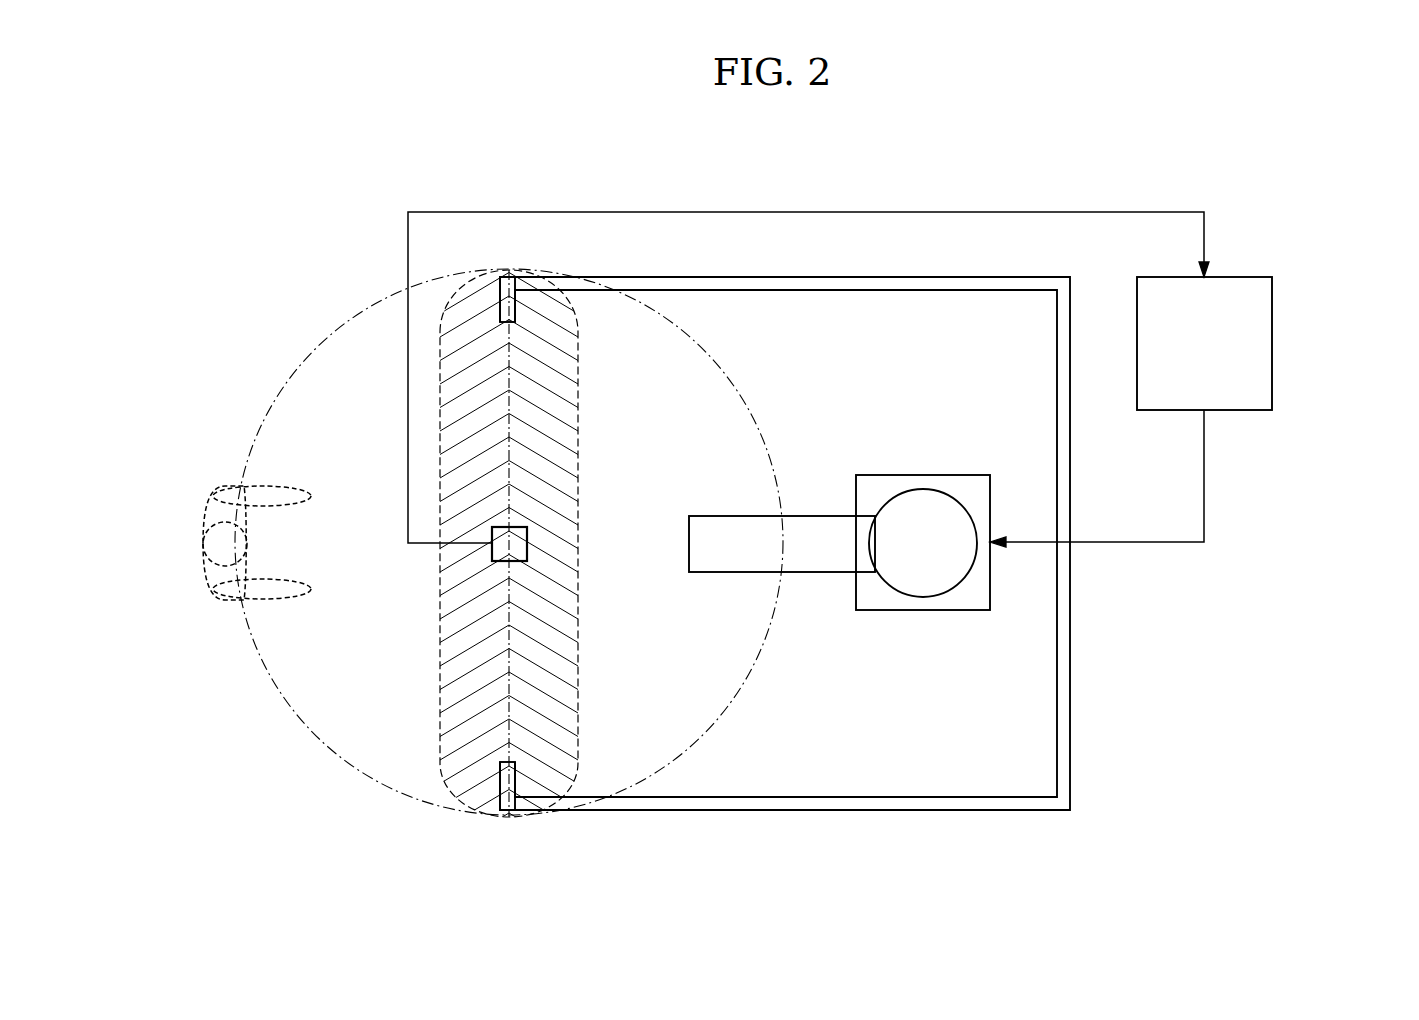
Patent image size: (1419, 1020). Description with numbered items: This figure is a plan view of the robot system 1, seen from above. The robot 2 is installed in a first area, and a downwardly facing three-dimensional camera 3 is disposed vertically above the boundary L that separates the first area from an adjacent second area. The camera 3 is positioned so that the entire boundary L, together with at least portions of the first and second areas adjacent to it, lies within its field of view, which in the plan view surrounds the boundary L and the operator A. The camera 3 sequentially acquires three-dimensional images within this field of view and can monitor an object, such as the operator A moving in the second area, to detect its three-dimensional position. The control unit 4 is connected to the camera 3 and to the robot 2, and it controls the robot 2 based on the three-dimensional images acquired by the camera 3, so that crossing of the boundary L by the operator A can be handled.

The robot system 1 is at (1334, 132).
The robot 2 is at (821, 513).
The three-dimensional camera 3 is at (527, 545).
The control unit 4 is at (1277, 330).
The boundary L is at (509, 651).
The operator A is at (203, 540).